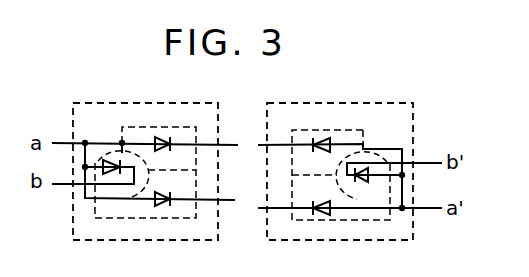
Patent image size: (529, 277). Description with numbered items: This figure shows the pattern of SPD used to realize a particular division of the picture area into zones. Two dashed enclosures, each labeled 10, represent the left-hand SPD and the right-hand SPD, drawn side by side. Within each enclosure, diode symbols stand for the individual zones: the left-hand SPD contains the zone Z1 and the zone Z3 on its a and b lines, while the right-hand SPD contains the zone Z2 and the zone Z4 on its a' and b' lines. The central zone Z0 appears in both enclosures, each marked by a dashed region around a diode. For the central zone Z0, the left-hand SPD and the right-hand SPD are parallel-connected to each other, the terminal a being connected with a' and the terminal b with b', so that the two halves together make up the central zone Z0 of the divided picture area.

The hybrid circuit module 10 is at (247, 159).
The central zone Z0 is at (114, 152).
The zone Z1 is at (171, 146).
The zone Z2 is at (318, 148).
The zone Z3 is at (168, 197).
The zone Z4 is at (318, 203).